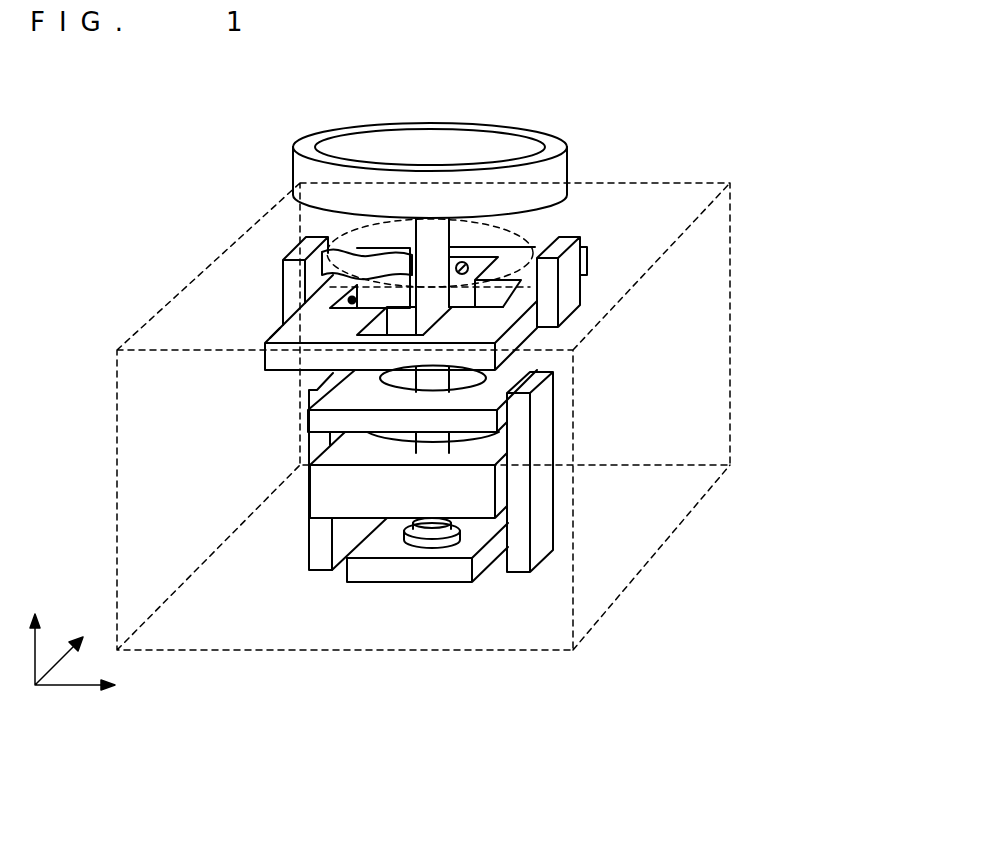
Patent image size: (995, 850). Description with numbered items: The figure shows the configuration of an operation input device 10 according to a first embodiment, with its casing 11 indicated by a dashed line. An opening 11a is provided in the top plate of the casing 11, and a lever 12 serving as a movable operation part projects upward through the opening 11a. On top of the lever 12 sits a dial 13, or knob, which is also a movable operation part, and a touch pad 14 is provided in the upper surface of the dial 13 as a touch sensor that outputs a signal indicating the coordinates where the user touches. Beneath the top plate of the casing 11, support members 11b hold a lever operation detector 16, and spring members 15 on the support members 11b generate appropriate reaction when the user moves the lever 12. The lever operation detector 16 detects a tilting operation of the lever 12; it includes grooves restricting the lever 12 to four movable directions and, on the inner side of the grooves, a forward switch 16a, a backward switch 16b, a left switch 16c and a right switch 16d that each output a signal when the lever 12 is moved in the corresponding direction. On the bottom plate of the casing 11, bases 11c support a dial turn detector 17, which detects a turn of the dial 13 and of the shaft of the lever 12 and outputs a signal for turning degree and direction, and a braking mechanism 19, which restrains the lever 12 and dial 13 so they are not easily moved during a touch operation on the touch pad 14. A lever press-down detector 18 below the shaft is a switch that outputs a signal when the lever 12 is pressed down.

The operation input device 10 is at (199, 129).
The casing 11 is at (688, 183).
The opening 11a is at (463, 235).
The support members 11b is at (569, 300).
The bases 11c is at (547, 527).
The lever 12 is at (432, 236).
The dial 13 is at (565, 177).
The touch pad 14 is at (487, 146).
The spring members 15 is at (345, 250).
The lever operation detector 16 is at (540, 342).
The forward switch 16a is at (468, 263).
The backward switch 16b is at (278, 335).
The left switch 16c is at (352, 298).
The right switch 16d is at (520, 280).
The dial turn detector 17 is at (478, 496).
The lever press-down detector 18 is at (428, 568).
The braking mechanism 19 is at (487, 418).